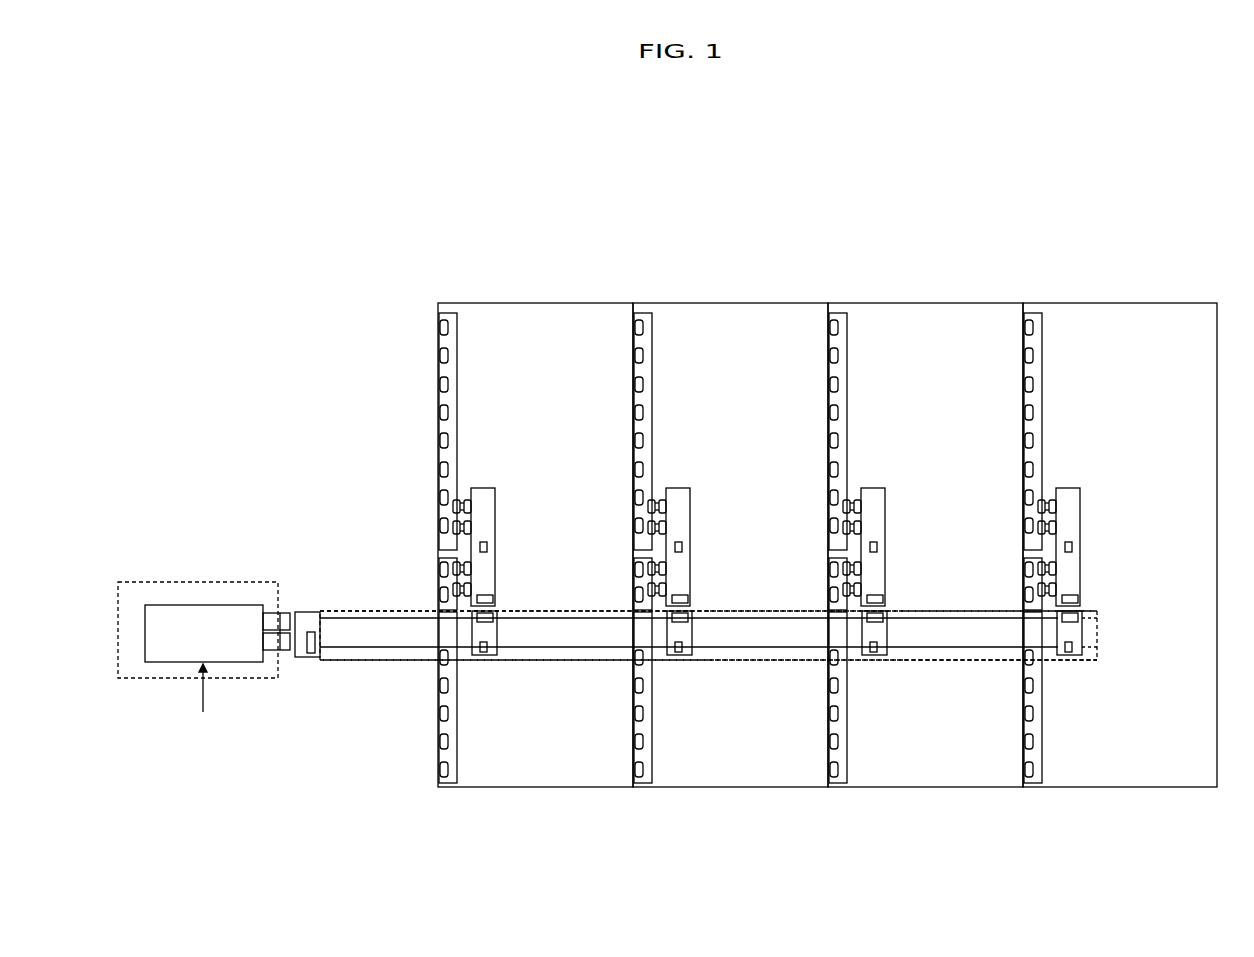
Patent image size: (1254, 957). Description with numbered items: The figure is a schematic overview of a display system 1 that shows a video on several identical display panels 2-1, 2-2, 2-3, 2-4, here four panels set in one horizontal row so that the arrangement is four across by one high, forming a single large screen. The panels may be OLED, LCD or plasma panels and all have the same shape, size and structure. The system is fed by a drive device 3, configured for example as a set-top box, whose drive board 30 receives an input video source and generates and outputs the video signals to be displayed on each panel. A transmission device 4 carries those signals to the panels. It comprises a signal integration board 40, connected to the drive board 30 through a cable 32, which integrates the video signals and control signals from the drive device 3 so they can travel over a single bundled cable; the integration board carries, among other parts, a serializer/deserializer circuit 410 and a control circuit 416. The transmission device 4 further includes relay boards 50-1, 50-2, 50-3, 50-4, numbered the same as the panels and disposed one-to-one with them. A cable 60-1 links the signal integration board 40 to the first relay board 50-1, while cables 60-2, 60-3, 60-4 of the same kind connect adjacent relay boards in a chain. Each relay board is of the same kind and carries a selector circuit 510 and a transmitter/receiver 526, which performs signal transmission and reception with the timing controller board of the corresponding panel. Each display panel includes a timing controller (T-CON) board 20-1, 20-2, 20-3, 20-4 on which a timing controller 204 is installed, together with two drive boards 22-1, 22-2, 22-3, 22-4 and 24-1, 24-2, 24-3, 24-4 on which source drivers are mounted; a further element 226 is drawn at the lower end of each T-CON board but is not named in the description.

The display system 1 is at (258, 260).
The drive device 3 is at (174, 582).
The drive board 30 is at (223, 604).
The cable 32 is at (283, 612).
The signal integration board 40 is at (305, 658).
The serializer/deserializer (SerDes) circuit 410 is at (317, 617).
The control circuit 416 is at (316, 650).
The transmission device 4 is at (385, 663).
The cable 60-1 is at (371, 610).
The cable 60-2 is at (582, 612).
The cable 60-3 is at (777, 612).
The cable 60-4 is at (974, 612).
The display panel 2-1 is at (527, 303).
The display panel 2-2 is at (733, 303).
The display panel 2-3 is at (928, 303).
The display panel 2-4 is at (1123, 303).
The drive board 24-1 is at (457, 383).
The drive board 24-2 is at (652, 383).
The drive board 24-3 is at (847, 383).
The drive board 24-4 is at (1042, 383).
The drive board 22-1 is at (457, 742).
The drive board 22-2 is at (652, 742).
The drive board 22-3 is at (847, 742).
The drive board 22-4 is at (1042, 742).
The timing controller (T-CON) board 20-1 is at (495, 508).
The timing controller (T-CON) board 20-2 is at (690, 508).
The timing controller (T-CON) board 20-3 is at (885, 508).
The timing controller (T-CON) board 20-4 is at (1080, 508).
The timing controller 204 is at (487, 546).
The module output connector 226 is at (495, 586).
The relay board 50-1 is at (478, 655).
The relay board 50-2 is at (673, 655).
The relay board 50-3 is at (868, 655).
The relay board 50-4 is at (1068, 655).
The transmitter/receiver 526 is at (497, 620).
The selector circuit 510 is at (497, 648).